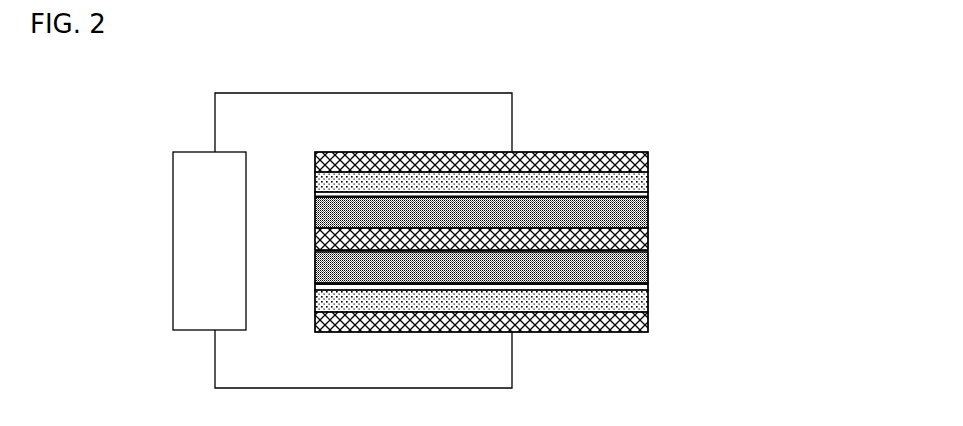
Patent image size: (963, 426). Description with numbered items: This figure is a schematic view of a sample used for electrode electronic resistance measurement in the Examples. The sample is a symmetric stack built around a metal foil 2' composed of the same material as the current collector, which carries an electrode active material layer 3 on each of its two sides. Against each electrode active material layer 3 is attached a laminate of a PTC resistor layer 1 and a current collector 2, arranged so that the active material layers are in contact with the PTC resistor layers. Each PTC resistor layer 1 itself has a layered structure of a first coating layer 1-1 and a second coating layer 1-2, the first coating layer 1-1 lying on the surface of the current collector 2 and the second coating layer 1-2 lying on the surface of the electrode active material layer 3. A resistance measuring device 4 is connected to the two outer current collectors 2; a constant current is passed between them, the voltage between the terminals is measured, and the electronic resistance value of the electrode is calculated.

The PTC resistor layer 1 is at (883, 73).
The first coating layer 1-1 is at (649, 180).
The second coating layer 1-2 is at (649, 195).
The current collector 2 is at (587, 216).
The metal foil composed of the same material as the current collector 2' is at (588, 223).
The electrode active material layer 3 is at (649, 215).
The resistance measuring device 4 is at (173, 213).